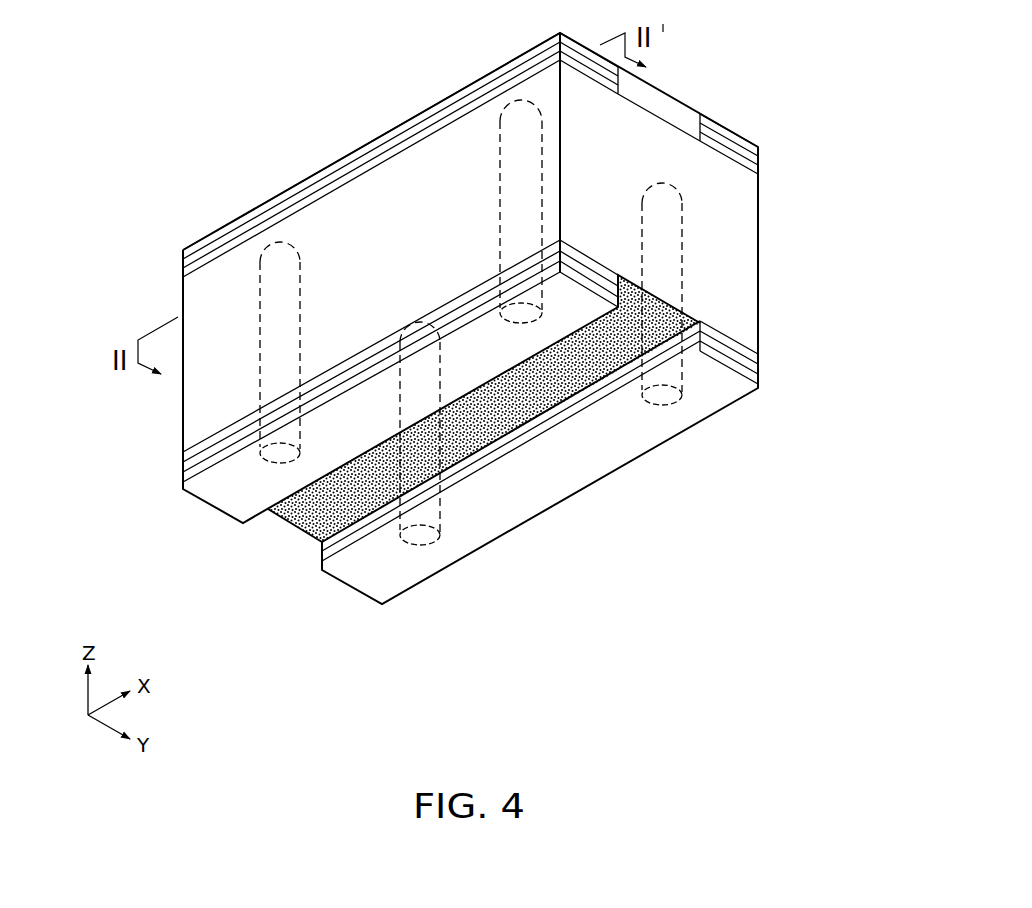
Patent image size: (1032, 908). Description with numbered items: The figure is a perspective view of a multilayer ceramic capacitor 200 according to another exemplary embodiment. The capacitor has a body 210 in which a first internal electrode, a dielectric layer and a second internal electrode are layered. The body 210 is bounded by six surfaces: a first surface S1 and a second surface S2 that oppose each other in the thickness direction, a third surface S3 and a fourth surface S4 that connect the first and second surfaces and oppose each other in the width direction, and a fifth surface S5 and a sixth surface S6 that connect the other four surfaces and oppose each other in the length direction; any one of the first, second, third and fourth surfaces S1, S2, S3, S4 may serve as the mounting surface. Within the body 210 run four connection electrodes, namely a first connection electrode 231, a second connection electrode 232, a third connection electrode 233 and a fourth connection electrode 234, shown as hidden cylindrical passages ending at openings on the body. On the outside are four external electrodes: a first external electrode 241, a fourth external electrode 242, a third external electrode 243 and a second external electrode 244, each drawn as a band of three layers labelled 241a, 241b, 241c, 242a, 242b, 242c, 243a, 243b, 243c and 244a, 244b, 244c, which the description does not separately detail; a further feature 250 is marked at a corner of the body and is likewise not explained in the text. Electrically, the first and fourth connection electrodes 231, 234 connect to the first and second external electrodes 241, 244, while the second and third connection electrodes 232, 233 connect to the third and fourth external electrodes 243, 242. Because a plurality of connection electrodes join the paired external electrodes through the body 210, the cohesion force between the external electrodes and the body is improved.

The multilayer ceramic capacitor 200 is at (270, 76).
The body 210 is at (307, 548).
The first connection electrode 231 is at (276, 460).
The second connection electrode 232 is at (420, 538).
The third connection electrode 233 is at (664, 398).
The fourth connection electrode 234 is at (521, 318).
The first external electrode 241 is at (299, 391).
The first layer of first laminated portion 241a is at (184, 455).
The second layer of first laminated portion 241b is at (184, 465).
The third layer of first laminated portion 241c is at (184, 477).
The fourth external electrode 242 is at (733, 331).
The first layer of second laminated portion 242a is at (760, 356).
The second layer of second laminated portion 242b is at (760, 366).
The third layer of second laminated portion 242c is at (760, 378).
The third external electrode 243 is at (733, 123).
The first layer of third laminated portion 243a is at (760, 170).
The second layer of third laminated portion 243b is at (760, 161).
The third layer of third laminated portion 243c is at (760, 151).
The second external electrode 244 is at (299, 170).
The first layer of fourth laminated portion 244a is at (184, 272).
The second layer of fourth laminated portion 244b is at (184, 262).
The third layer of fourth laminated portion 244c is at (184, 253).
The corner portion 250 is at (184, 451).
The first surface S1 is at (315, 220).
The second surface S2 is at (377, 484).
The third surface S3 is at (256, 261).
The fourth surface S4 is at (520, 500).
The fifth surface S5 is at (290, 509).
The sixth surface S6 is at (640, 146).